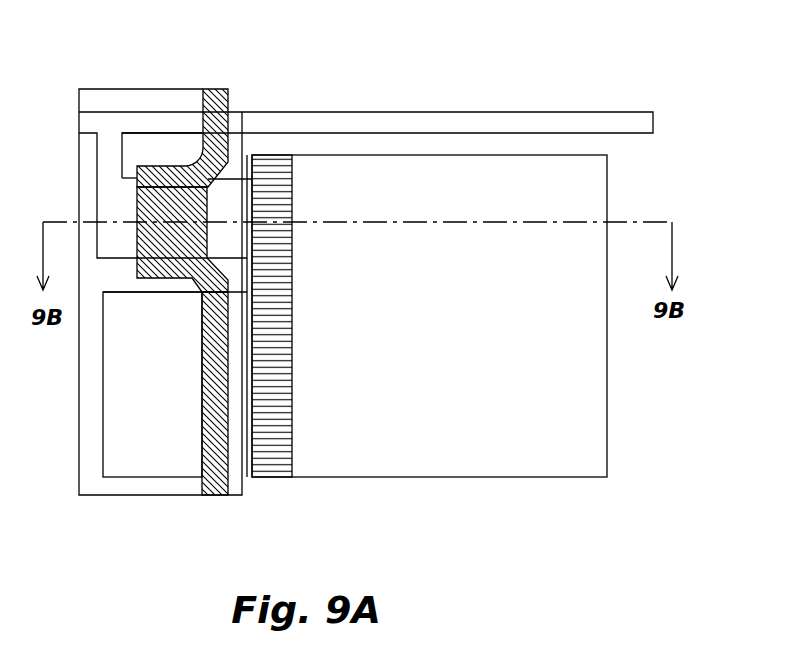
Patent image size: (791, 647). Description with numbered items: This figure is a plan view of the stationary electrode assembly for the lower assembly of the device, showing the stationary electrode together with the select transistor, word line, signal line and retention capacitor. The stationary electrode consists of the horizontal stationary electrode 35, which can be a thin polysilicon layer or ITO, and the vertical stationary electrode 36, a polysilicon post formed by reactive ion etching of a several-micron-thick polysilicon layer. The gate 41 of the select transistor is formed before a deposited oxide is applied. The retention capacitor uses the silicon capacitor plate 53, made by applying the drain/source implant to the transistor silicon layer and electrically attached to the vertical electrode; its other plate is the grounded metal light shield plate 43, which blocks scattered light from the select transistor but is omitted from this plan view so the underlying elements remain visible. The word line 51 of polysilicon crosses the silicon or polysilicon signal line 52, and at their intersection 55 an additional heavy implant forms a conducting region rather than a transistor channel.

The horizontal stationary electrode 35 is at (560, 478).
The vertical stationary electrode 36 is at (266, 452).
The gate 41 is at (137, 170).
The light shield plate 43 is at (78, 469).
The word line 51 is at (218, 497).
The signal line 52 is at (648, 126).
The silicon capacitor plate 53 is at (160, 432).
The intersection 55 is at (218, 124).